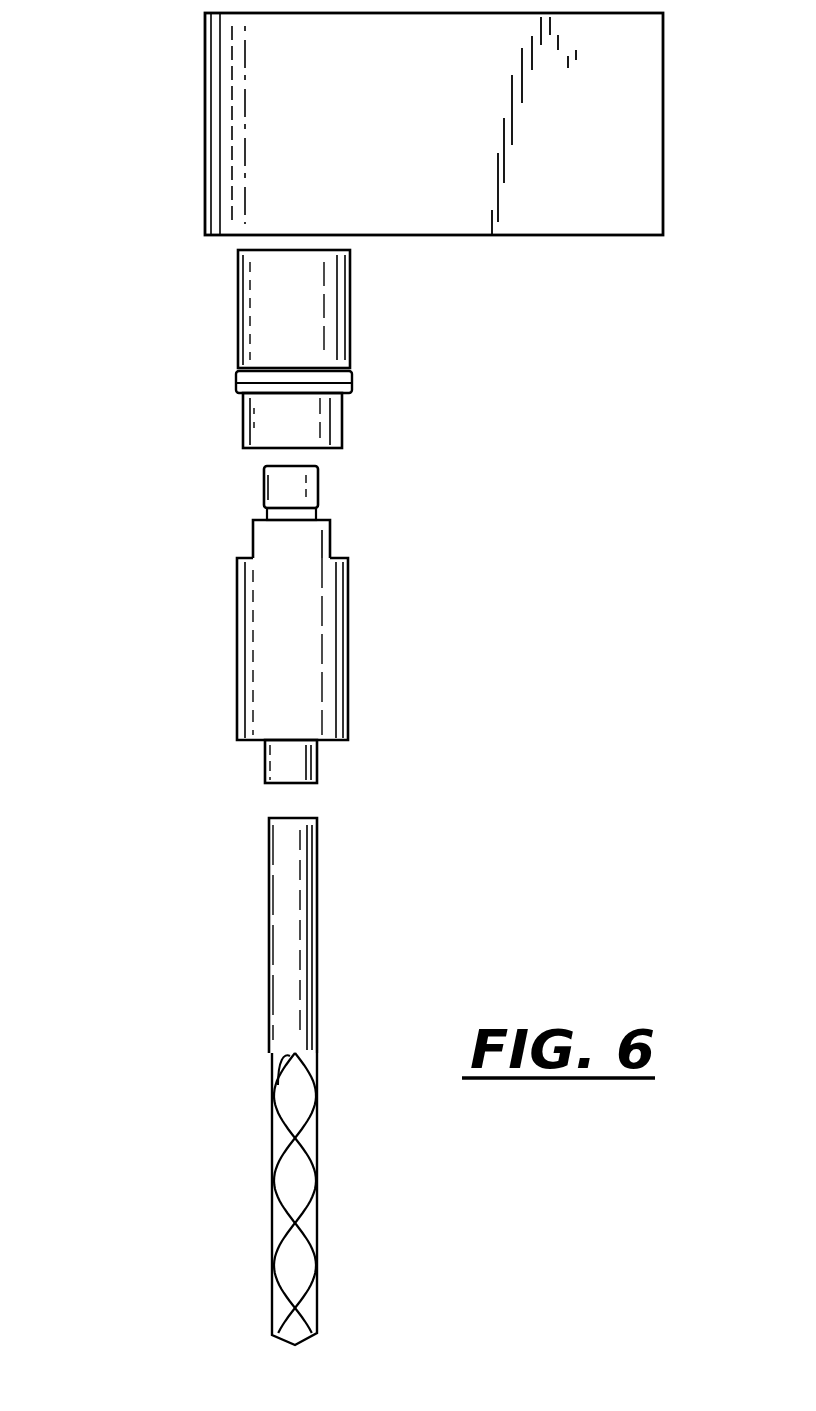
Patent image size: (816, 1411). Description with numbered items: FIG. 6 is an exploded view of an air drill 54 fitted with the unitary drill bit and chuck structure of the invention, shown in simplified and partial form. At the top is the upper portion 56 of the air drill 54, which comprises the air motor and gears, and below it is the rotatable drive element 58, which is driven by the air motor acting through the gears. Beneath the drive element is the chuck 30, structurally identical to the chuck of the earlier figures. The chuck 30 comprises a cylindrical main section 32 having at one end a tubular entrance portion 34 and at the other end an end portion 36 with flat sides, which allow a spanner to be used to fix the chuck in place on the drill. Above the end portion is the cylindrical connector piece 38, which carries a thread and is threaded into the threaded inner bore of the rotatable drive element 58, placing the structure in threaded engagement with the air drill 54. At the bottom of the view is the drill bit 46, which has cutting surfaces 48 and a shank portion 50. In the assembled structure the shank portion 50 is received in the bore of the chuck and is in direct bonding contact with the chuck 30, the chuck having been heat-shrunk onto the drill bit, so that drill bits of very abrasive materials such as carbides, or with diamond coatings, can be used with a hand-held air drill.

The chuck 30 is at (226, 668).
The cylindrical main section 32 is at (328, 640).
The tubular entrance portion 34 is at (302, 763).
The end portion 36 is at (317, 538).
The cylindrical connector piece 38 is at (303, 487).
The drill bit 46 is at (230, 973).
The cutting surfaces 48 is at (278, 1147).
The shank portion 50 is at (297, 910).
The air drill 54 is at (148, 224).
The upper portion 56 is at (637, 157).
The rotatable drive element 58 is at (330, 316).